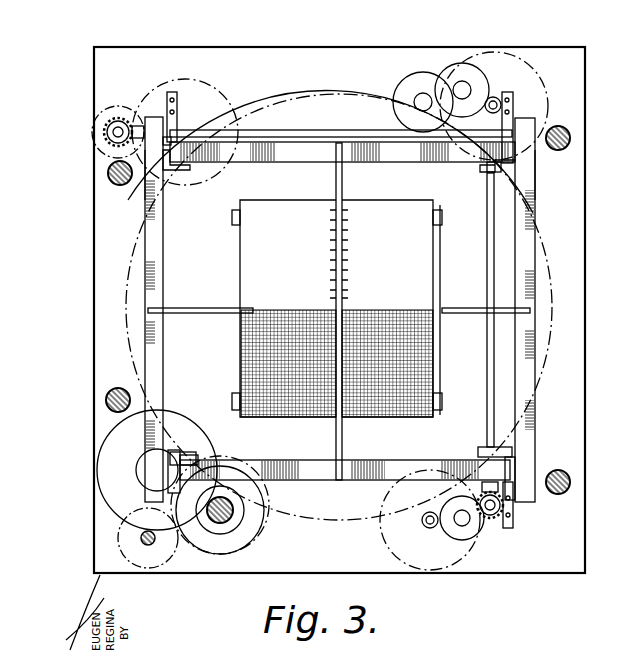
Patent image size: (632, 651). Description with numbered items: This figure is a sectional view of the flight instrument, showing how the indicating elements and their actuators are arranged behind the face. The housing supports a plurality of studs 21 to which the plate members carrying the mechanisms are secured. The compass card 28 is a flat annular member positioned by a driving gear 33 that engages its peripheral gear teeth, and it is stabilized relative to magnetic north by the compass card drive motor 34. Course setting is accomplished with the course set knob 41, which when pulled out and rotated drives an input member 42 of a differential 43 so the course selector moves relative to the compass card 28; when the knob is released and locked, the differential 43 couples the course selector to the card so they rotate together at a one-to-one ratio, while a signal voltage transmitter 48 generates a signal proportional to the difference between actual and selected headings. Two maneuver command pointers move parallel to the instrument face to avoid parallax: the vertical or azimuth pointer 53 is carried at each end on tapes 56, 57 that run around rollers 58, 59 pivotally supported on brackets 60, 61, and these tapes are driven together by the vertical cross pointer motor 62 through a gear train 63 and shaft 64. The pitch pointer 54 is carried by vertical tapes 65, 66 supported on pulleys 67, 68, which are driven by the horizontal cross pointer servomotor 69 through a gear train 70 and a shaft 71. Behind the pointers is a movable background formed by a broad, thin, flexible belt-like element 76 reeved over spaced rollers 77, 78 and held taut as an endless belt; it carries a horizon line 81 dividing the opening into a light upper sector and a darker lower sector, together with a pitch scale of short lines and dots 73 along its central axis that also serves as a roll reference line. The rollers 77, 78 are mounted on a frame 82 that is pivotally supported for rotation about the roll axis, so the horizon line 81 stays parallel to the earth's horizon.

The studs 21 is at (570, 138).
The compass card 28 is at (366, 97).
The driving gear 33 is at (423, 95).
The compass card drive motor 34 is at (530, 60).
The course set knob 41 is at (586, 400).
The input member 42 is at (262, 520).
The differential 43 is at (248, 548).
The signal voltage transmitter 48 is at (268, 492).
The vertical or azimuth pointer 53 is at (343, 180).
The pitch pointer 54 is at (195, 308).
The tape or band 56 is at (305, 152).
The tape or band 57 is at (372, 461).
The roller 58 is at (190, 150).
The roller 59 is at (222, 455).
The bracket 60 is at (146, 178).
The bracket 61 is at (180, 450).
The vertical cross pointer motor 62 is at (470, 555).
The gear train 63 is at (495, 518).
The shaft 64 is at (487, 380).
The vertical band or tape 65 is at (163, 240).
The vertical band or tape 66 is at (535, 262).
The pulley 67 is at (152, 138).
The pulley 68 is at (512, 118).
The horizontal cross pointer servomotor 69 is at (228, 100).
The gear train 70 is at (120, 118).
The shaft 71 is at (352, 136).
The short lines and dots 73 is at (336, 250).
The belt-like element 76 is at (433, 250).
The roller 77 is at (295, 206).
The roller 78 is at (300, 418).
The horizon line 81 is at (405, 310).
The frame 82 is at (442, 300).